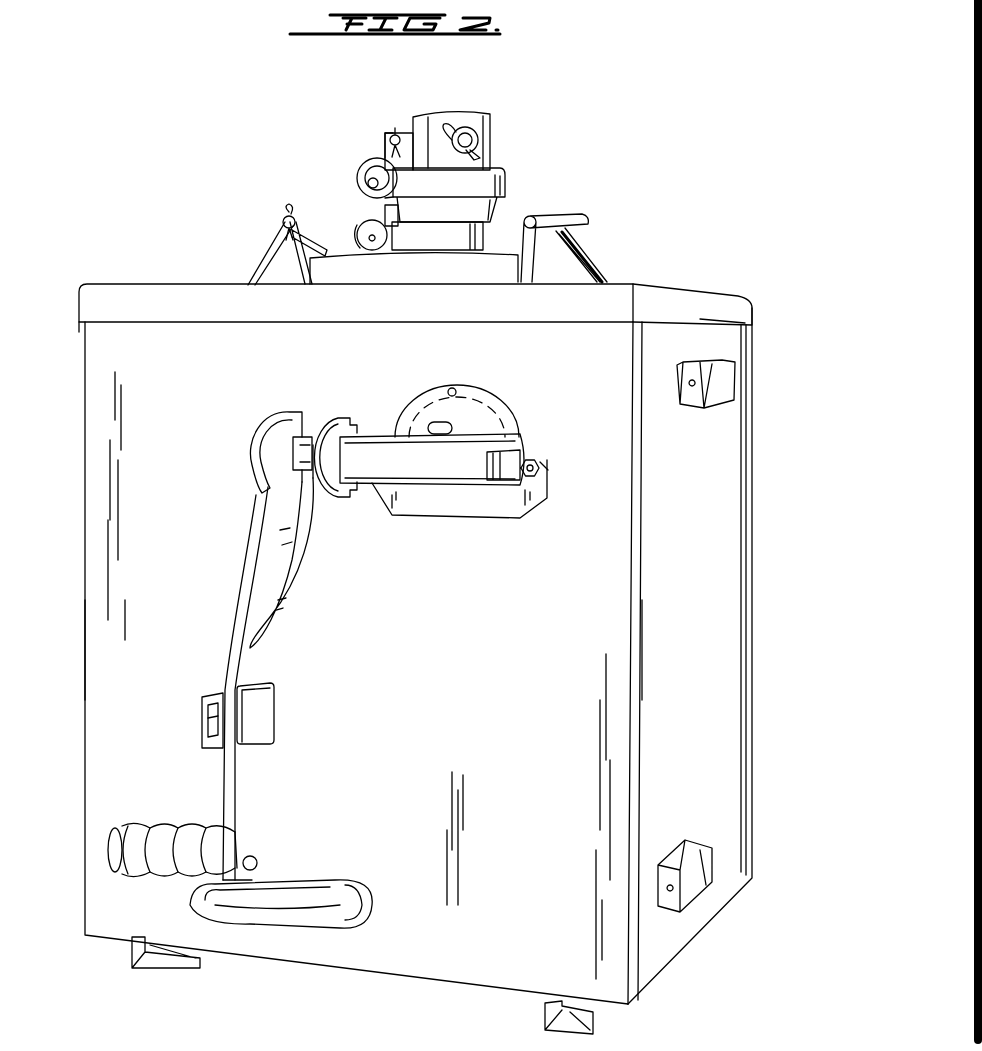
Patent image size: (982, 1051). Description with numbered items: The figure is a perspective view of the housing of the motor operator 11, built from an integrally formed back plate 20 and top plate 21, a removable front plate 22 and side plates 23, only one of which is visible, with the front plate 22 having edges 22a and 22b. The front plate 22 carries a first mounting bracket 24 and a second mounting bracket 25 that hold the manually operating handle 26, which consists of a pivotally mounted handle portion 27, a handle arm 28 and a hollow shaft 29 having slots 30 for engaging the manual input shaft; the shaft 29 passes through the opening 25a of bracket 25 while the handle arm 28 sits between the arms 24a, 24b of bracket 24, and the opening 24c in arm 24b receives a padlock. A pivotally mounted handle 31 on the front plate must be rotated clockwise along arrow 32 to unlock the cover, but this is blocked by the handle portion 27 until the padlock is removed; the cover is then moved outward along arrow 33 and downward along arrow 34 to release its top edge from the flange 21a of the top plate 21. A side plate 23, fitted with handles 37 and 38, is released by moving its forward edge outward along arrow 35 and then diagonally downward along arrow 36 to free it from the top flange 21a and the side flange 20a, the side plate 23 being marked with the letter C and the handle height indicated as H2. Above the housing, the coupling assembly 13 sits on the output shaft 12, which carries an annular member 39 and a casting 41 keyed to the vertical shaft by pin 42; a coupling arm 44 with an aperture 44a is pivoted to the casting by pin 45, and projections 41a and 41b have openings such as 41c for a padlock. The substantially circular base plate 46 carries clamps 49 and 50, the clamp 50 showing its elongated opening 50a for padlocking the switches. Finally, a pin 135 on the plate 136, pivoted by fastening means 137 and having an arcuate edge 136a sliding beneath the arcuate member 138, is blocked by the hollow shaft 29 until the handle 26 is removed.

The operator 11 is at (200, 246).
The output shaft 12 is at (500, 246).
The coupling assembly 13 is at (425, 190).
The back plate 20 is at (756, 450).
The side flange 20a is at (756, 489).
The top plate 21 is at (688, 290).
The top flange 21a is at (752, 318).
The front plate 22 is at (503, 656).
The door edge 22a is at (84, 642).
The door edge 22b is at (648, 568).
The side plate 23 is at (713, 500).
The first mounting bracket 24 is at (275, 712).
The arm 24a is at (270, 740).
The arm 24b is at (216, 748).
The opening 24c is at (210, 725).
The second mounting bracket 25 is at (340, 420).
The opening 25a is at (345, 492).
The manually operating handle 26 is at (250, 542).
The handle portion 27 is at (185, 832).
The handle arm 28 is at (225, 672).
The shaft 29 is at (380, 434).
The slots 30 is at (523, 458).
The handle 31 is at (268, 928).
The arrow 32 is at (300, 855).
The arrow 33 is at (336, 1007).
The arrow 34 is at (305, 370).
The arrow 35 is at (682, 1002).
The arrow 36 is at (664, 948).
The handle 37 is at (694, 410).
The handle 38 is at (705, 848).
The annular member 39 is at (492, 205).
The casting 41 is at (425, 113).
The projection 41a is at (356, 177).
The projection 41b is at (370, 165).
The opening 41c is at (368, 183).
The pin 42 is at (470, 130).
The coupling arm 44 is at (357, 236).
The aperture 44a is at (375, 240).
The pin 45 is at (388, 134).
The base plate 46 is at (386, 216).
The clamp 49 is at (270, 270).
The clamp 50 is at (585, 246).
The elongated opening 50a is at (598, 268).
The pin 135 is at (438, 422).
The plate 136 is at (462, 505).
The upper arcuate edge 136a is at (490, 388).
The fastening means 137 is at (549, 471).
The arcuate shaped member 138 is at (513, 416).
The direction C is at (712, 604).
The height H2 is at (228, 650).